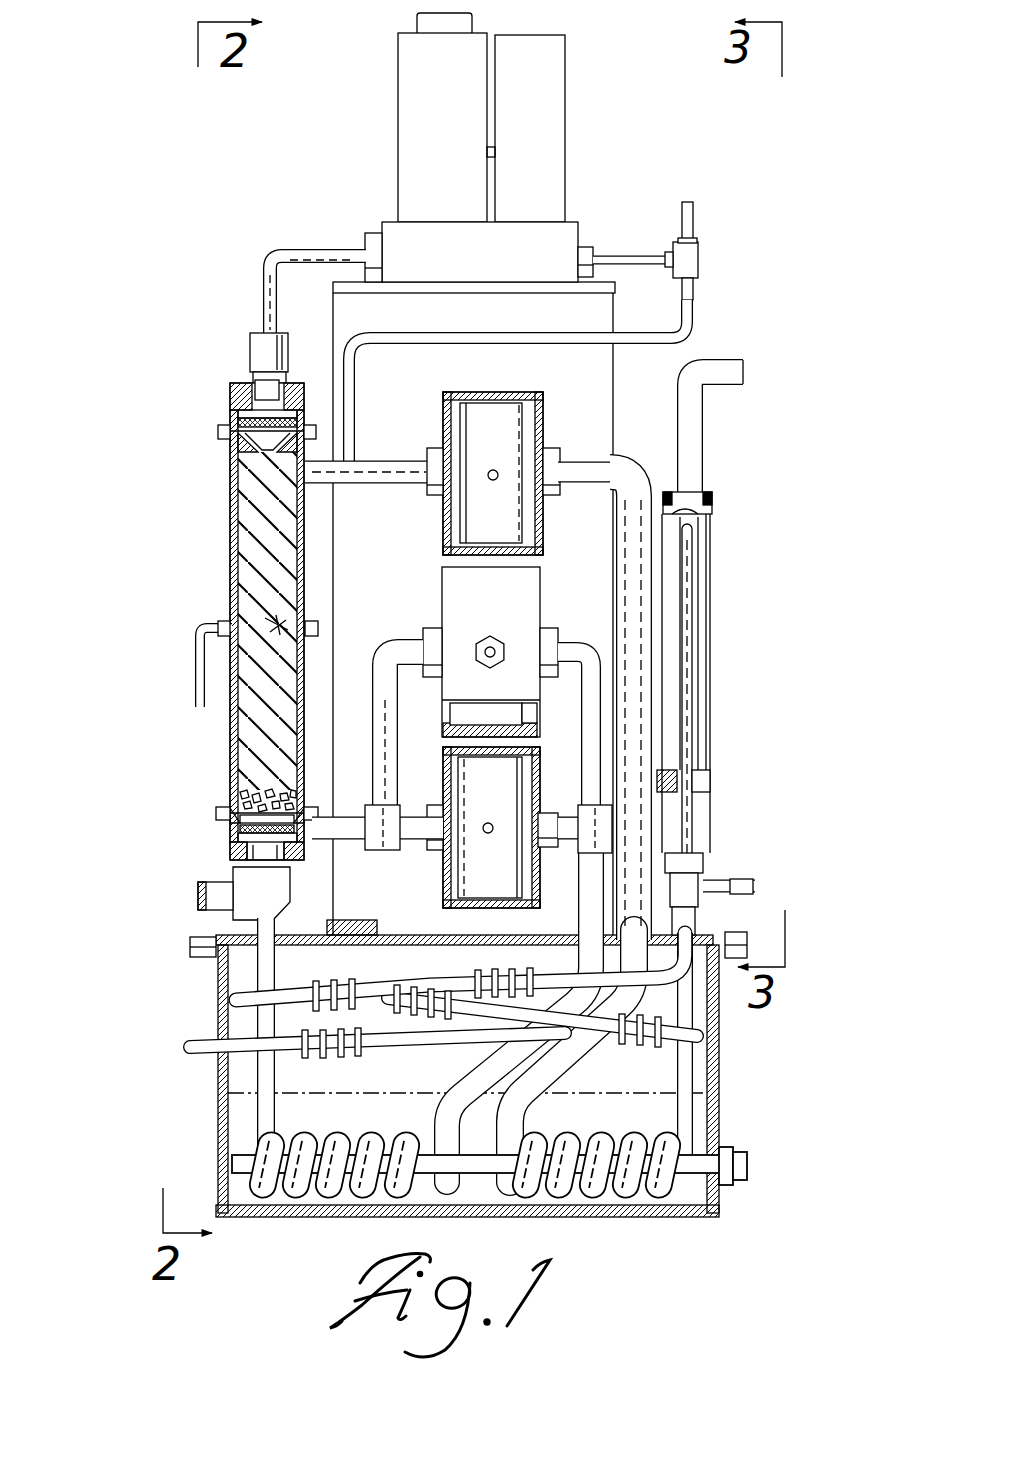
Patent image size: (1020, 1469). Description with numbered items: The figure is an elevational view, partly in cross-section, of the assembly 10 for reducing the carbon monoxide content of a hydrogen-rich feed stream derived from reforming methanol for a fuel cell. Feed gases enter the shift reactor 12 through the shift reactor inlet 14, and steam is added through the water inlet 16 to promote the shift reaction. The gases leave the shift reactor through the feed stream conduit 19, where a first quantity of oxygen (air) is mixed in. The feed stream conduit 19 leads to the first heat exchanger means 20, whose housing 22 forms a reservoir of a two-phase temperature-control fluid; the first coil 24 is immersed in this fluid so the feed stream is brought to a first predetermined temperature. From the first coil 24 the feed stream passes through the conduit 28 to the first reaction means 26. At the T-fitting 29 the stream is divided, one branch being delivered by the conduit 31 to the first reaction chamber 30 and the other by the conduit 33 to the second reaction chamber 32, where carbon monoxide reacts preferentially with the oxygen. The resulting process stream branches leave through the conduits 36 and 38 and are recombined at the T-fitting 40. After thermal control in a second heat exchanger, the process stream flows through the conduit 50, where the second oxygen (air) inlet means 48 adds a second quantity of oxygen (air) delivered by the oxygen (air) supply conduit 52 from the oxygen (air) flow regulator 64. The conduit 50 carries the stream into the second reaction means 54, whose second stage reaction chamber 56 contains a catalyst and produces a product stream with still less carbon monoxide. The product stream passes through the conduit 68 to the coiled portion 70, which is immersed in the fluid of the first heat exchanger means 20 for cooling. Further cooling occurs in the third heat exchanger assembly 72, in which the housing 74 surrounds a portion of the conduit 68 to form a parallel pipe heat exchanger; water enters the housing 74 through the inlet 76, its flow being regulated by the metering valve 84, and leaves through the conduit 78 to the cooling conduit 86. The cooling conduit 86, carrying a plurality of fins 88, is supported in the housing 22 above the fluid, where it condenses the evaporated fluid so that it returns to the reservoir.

The assembly 10 is at (287, 222).
The shift reactor 12 is at (230, 514).
The shift reactor inlet 14 is at (215, 888).
The water inlet 16 is at (205, 624).
The feed stream conduit 19 is at (262, 932).
The first heat exchanger means 20 is at (215, 998).
The housing 22 is at (218, 1143).
The first coil 24 is at (322, 1192).
The first reaction means 26 is at (537, 587).
The conduit 28 is at (592, 872).
The T-fitting 29 is at (609, 822).
The first reaction chamber 30 is at (514, 784).
The conduit 31 is at (566, 820).
The second reaction chamber 32 is at (398, 715).
The conduit 33 is at (596, 606).
The conduit 36 is at (410, 820).
The conduit 38 is at (421, 637).
The T-fitting 40 is at (382, 850).
The second oxygen (air) inlet means 48 is at (480, 330).
The conduit 50 is at (398, 463).
The oxygen (air) supply conduit 52 is at (347, 452).
The second reaction means 54 is at (507, 392).
The second stage reaction chamber 56 is at (543, 428).
The oxygen (air) flow regulator 64 is at (560, 178).
The conduit 68 is at (585, 791).
The coiled portion 70 is at (646, 1200).
The third heat exchanger assembly 72 is at (709, 680).
The housing 74 is at (707, 597).
The inlet 76 is at (747, 880).
The conduit 78 is at (692, 532).
The metering valve 84 is at (706, 783).
The cooling conduit 86 is at (700, 923).
The fins 88 is at (530, 960).